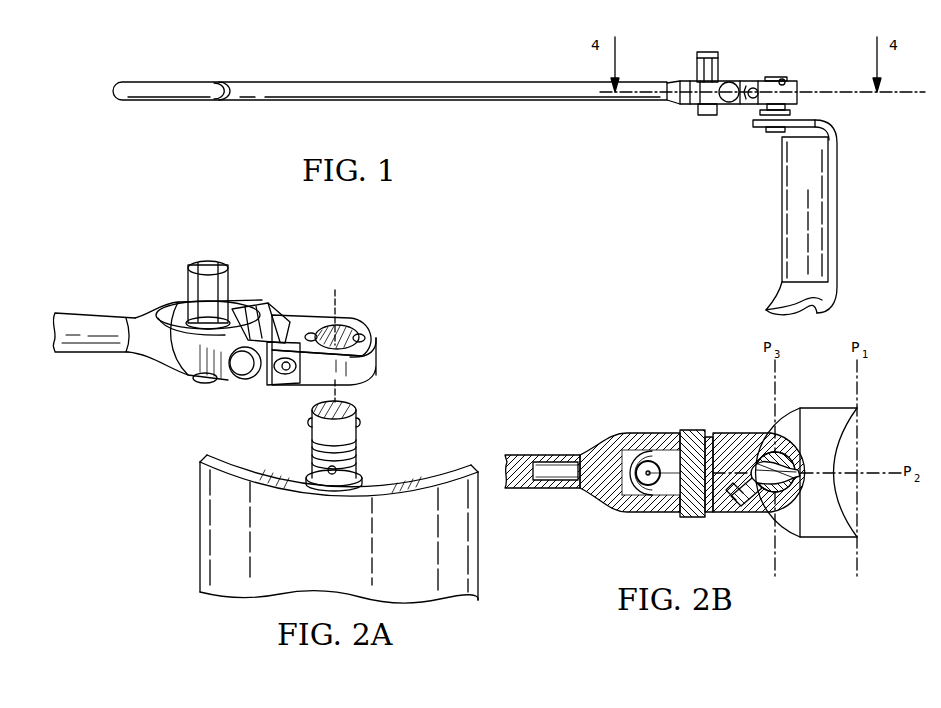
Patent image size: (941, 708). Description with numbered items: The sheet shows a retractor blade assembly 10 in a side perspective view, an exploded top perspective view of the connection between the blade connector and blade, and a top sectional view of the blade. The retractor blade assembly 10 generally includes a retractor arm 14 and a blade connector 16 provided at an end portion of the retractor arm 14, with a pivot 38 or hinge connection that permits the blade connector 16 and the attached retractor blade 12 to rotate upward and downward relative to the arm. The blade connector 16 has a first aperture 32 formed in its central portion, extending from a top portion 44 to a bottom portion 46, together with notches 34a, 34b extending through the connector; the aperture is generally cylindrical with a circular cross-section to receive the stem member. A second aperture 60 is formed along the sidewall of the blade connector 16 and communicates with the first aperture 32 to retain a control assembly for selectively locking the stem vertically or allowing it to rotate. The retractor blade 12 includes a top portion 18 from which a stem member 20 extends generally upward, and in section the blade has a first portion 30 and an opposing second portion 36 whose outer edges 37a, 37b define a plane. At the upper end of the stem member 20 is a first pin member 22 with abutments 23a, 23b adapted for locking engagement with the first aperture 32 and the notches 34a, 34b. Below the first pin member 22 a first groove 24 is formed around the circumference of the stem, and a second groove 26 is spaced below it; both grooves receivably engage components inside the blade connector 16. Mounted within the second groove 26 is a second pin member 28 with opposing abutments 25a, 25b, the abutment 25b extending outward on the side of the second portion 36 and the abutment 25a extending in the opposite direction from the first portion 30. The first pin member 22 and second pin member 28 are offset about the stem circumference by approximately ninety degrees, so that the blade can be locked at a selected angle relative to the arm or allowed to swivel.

In FIG. 1, the retractor blade assembly 10 is at (328, 65).
In FIG. 2A, the retractor blade assembly 10 is at (160, 248).
In FIG. 1, the retractor blade 12 is at (837, 272).
In FIG. 1, the retractor arm 14 is at (465, 92).
In FIG. 2A, the retractor arm 14 is at (82, 313).
In FIG. 2B, the retractor arm 14 is at (520, 455).
In FIG. 1, the blade connector 16 is at (759, 81).
In FIG. 2A, the blade connector 16 is at (378, 348).
In FIG. 2B, the blade connector 16 is at (630, 472).
In FIG. 1, the top portion 18 is at (815, 118).
In FIG. 2A, the top portion 18 is at (430, 476).
In FIG. 1, the stem member 20 is at (773, 78).
In FIG. 2A, the stem member 20 is at (350, 410).
In FIG. 2B, the stem member 20 is at (759, 472).
In FIG. 2B, the first pin member 22 is at (781, 452).
In FIG. 1, the abutment 23a is at (785, 80).
In FIG. 2A, the abutment 23a is at (358, 421).
In FIG. 2B, the abutment 23a is at (768, 512).
In FIG. 2A, the abutment 23b is at (282, 372).
In FIG. 2B, the abutment 23b is at (772, 448).
In FIG. 2A, the first groove 24 is at (355, 444).
In FIG. 2B, the first groove 24 is at (696, 473).
In FIG. 2B, the abutment 25a is at (808, 498).
In FIG. 1, the abutment 25b is at (770, 114).
In FIG. 2A, the abutment 25b is at (330, 474).
In FIG. 2B, the abutment 25b is at (729, 512).
In FIG. 2A, the second groove 26 is at (356, 469).
In FIG. 2B, the second pin member 28 is at (790, 512).
In FIG. 1, the first portion 30 is at (837, 209).
In FIG. 2B, the first portion 30 is at (840, 437).
In FIG. 2A, the first aperture 32 is at (345, 332).
In FIG. 2A, the notch 34a is at (362, 337).
In FIG. 2A, the notch 34b is at (310, 334).
In FIG. 1, the second portion 36 is at (795, 214).
In FIG. 2A, the second portion 36 is at (452, 551).
In FIG. 2B, the second portion 36 is at (830, 412).
In FIG. 2B, the outer edge 37a is at (857, 537).
In FIG. 2B, the outer edge 37b is at (857, 408).
In FIG. 2A, the pivot 38 is at (227, 380).
In FIG. 1, the top portion 44 is at (797, 89).
In FIG. 2A, the top portion 44 is at (285, 320).
In FIG. 1, the bottom portion 46 is at (750, 101).
In FIG. 1, the second aperture 60 is at (754, 88).
In FIG. 2A, the second aperture 60 is at (256, 378).
In FIG. 2B, the second aperture 60 is at (645, 473).